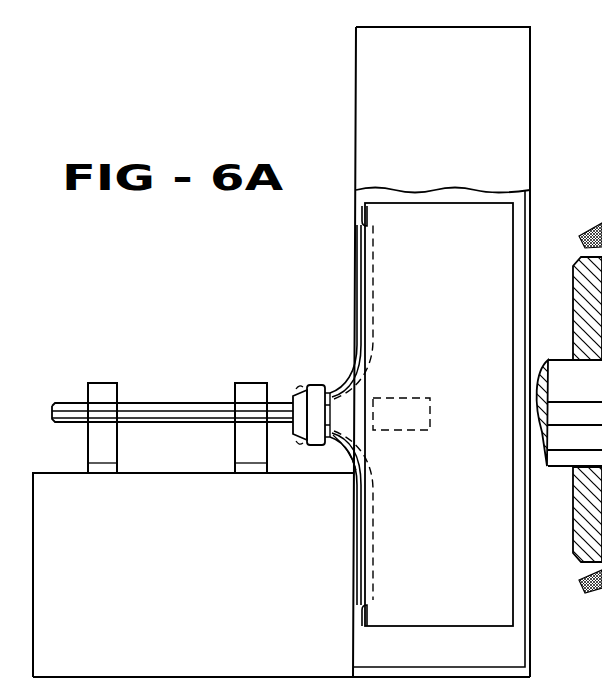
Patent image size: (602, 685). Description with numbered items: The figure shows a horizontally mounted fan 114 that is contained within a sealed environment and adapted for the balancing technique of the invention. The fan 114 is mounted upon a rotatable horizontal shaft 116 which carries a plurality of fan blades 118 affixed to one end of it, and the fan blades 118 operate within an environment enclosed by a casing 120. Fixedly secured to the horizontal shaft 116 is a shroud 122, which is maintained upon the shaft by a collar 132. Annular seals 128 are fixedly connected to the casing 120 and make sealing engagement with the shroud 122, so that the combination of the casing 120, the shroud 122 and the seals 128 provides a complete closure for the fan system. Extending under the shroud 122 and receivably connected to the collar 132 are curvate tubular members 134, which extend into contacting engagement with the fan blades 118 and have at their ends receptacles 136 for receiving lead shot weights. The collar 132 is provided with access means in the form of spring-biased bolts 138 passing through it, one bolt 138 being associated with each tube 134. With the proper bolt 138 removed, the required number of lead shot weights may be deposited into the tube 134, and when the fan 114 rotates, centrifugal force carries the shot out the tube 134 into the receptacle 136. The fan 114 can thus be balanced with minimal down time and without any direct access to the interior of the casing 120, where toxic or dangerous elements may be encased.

The fan 114 is at (258, 297).
The horizontal shaft 116 is at (176, 403).
The fan blades 118 is at (426, 208).
The casing 120 is at (522, 87).
The shroud 122 is at (341, 450).
The seals 128 is at (356, 374).
The collar 132 is at (313, 392).
The curvate tubular members 134 is at (366, 375).
The receptacles 136 is at (362, 212).
The spring-biased bolts 138 is at (569, 413).